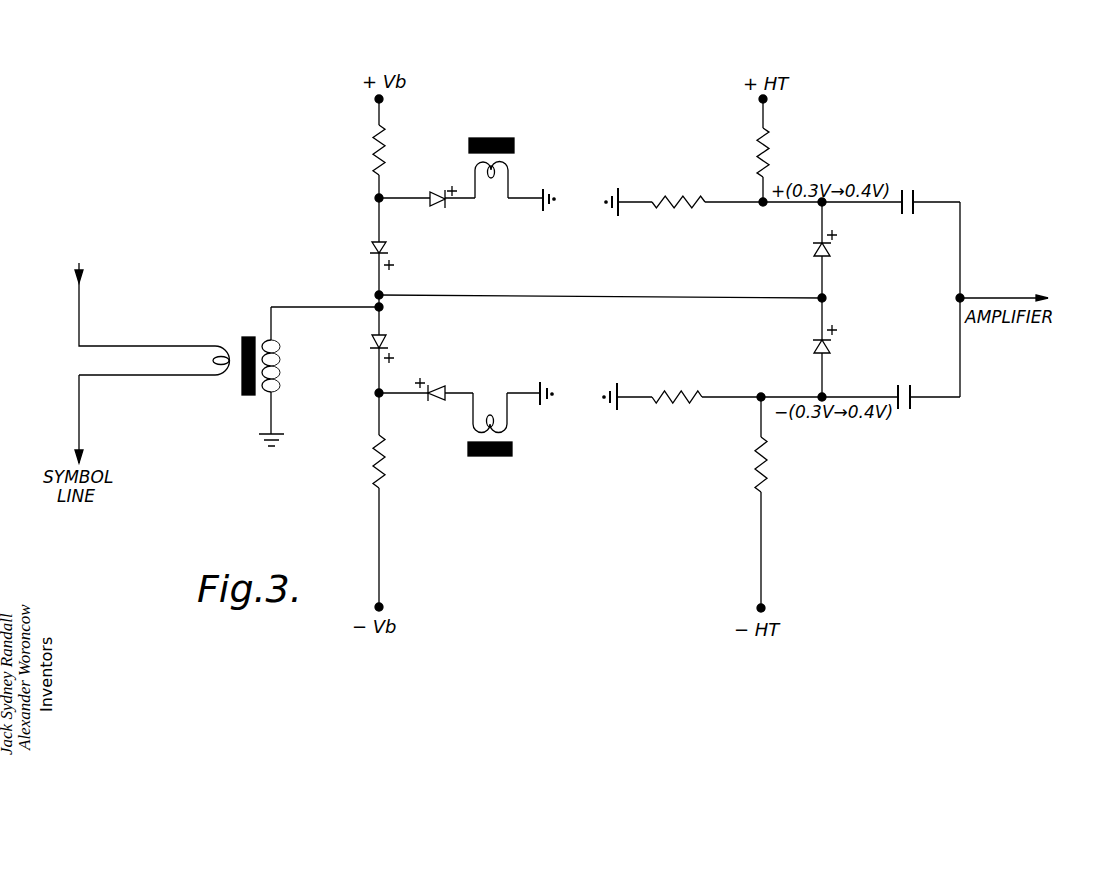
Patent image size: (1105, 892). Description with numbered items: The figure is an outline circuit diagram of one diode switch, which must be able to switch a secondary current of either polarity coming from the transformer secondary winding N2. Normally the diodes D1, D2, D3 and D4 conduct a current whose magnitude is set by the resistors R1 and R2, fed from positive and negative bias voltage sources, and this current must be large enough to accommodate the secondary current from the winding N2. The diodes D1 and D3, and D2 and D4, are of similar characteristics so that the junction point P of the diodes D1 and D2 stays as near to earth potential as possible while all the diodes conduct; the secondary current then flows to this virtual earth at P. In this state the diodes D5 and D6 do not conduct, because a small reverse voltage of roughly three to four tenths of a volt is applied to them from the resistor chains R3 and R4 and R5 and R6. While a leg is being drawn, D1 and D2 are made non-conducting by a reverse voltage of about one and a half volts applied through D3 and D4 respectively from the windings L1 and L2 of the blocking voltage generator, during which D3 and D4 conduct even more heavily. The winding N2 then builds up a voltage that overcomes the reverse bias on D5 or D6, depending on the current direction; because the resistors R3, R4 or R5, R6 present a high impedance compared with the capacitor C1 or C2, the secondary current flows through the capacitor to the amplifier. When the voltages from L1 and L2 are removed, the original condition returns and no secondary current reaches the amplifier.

The resistor R1 is at (364, 150).
The resistor R2 is at (362, 461).
The resistor R3 is at (746, 152).
The resistor R4 is at (678, 186).
The resistor R5 is at (774, 502).
The resistor R6 is at (677, 405).
The diode D1 is at (370, 254).
The diode D2 is at (368, 347).
The diode D3 is at (441, 187).
The diode D4 is at (440, 381).
The diode D5 is at (810, 250).
The diode D6 is at (809, 347).
The winding of the blocking voltage generator L1 is at (504, 168).
The winding of the blocking voltage generator L2 is at (504, 424).
The capacitor C1 is at (908, 215).
The capacitor C2 is at (904, 387).
The secondary winding N2 is at (276, 376).
The junction point P is at (578, 292).